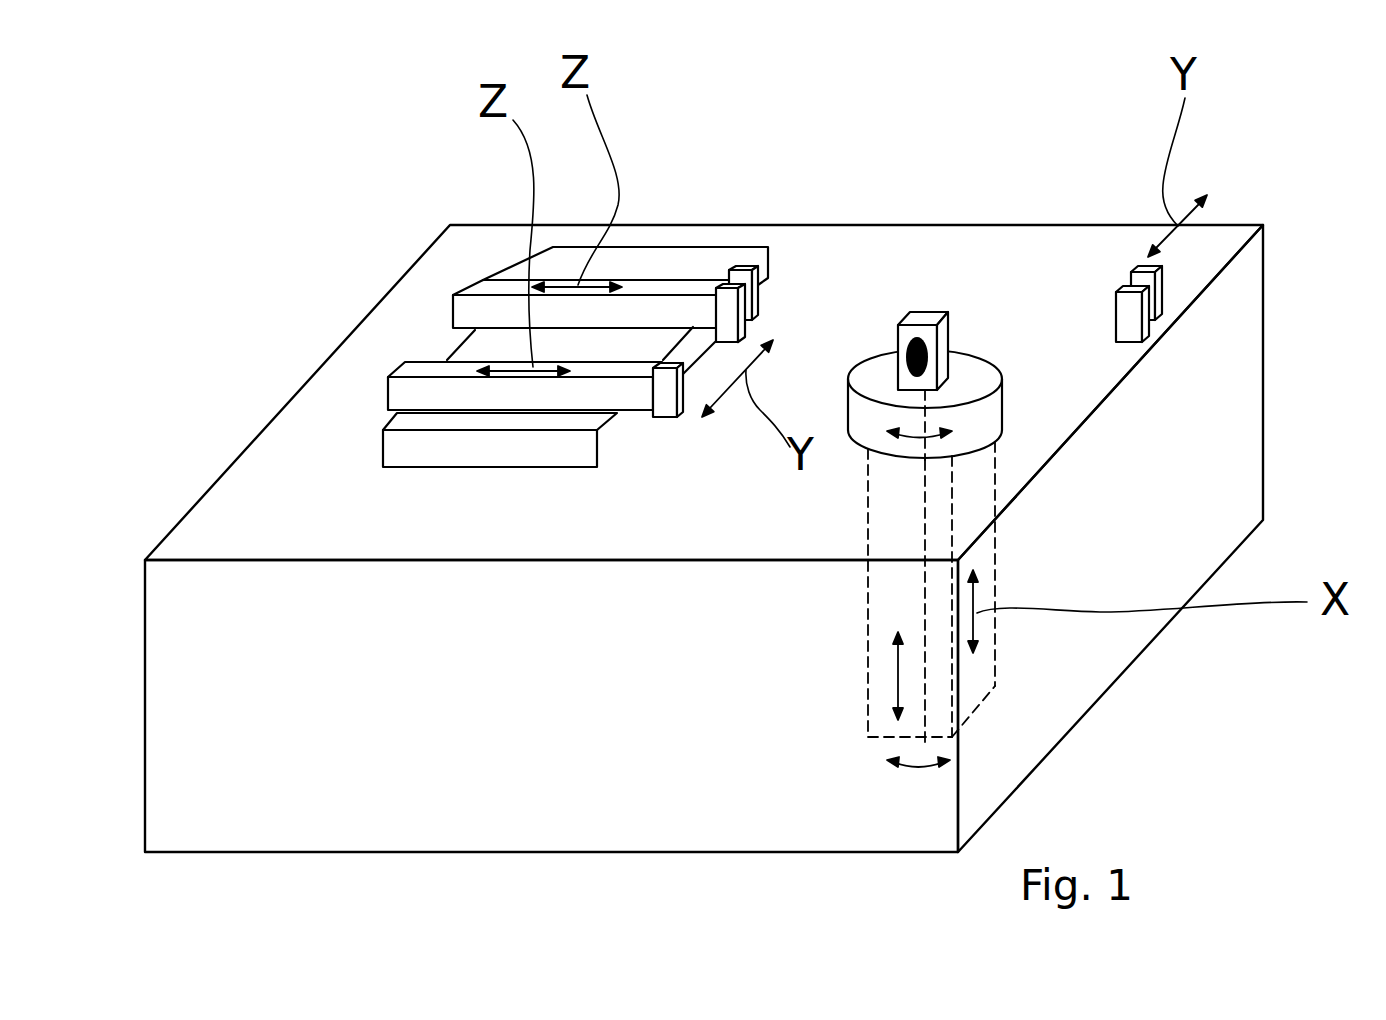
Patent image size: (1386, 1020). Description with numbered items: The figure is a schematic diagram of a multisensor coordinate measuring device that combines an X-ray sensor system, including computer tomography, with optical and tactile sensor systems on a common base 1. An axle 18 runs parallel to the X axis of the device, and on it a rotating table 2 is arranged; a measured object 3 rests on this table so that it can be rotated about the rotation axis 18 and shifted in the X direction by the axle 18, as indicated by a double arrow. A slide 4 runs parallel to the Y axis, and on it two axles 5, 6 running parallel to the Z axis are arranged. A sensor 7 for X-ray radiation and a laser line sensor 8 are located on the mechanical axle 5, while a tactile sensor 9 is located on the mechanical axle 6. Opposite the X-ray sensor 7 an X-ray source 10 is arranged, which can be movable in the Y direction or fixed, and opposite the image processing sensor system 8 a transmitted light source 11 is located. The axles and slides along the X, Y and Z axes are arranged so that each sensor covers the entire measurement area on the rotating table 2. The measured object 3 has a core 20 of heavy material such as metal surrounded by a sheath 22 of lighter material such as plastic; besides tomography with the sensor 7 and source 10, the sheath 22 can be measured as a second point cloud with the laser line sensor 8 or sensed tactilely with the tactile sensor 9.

The machine base 1 is at (900, 695).
The rotating table 2 is at (990, 423).
The measured object 3 is at (910, 340).
The slide 4 is at (490, 350).
The axle 5 is at (482, 290).
The axle 6 is at (415, 400).
The sensor for X-ray radiation 7 is at (740, 278).
The laser line sensor 8 is at (727, 315).
The tactile sensor 9 is at (663, 407).
The X-ray source 10 is at (1148, 277).
The transmitted light source 11 is at (1133, 317).
The axle 18 is at (925, 600).
The core 20 is at (946, 338).
The sheath 22 is at (897, 378).